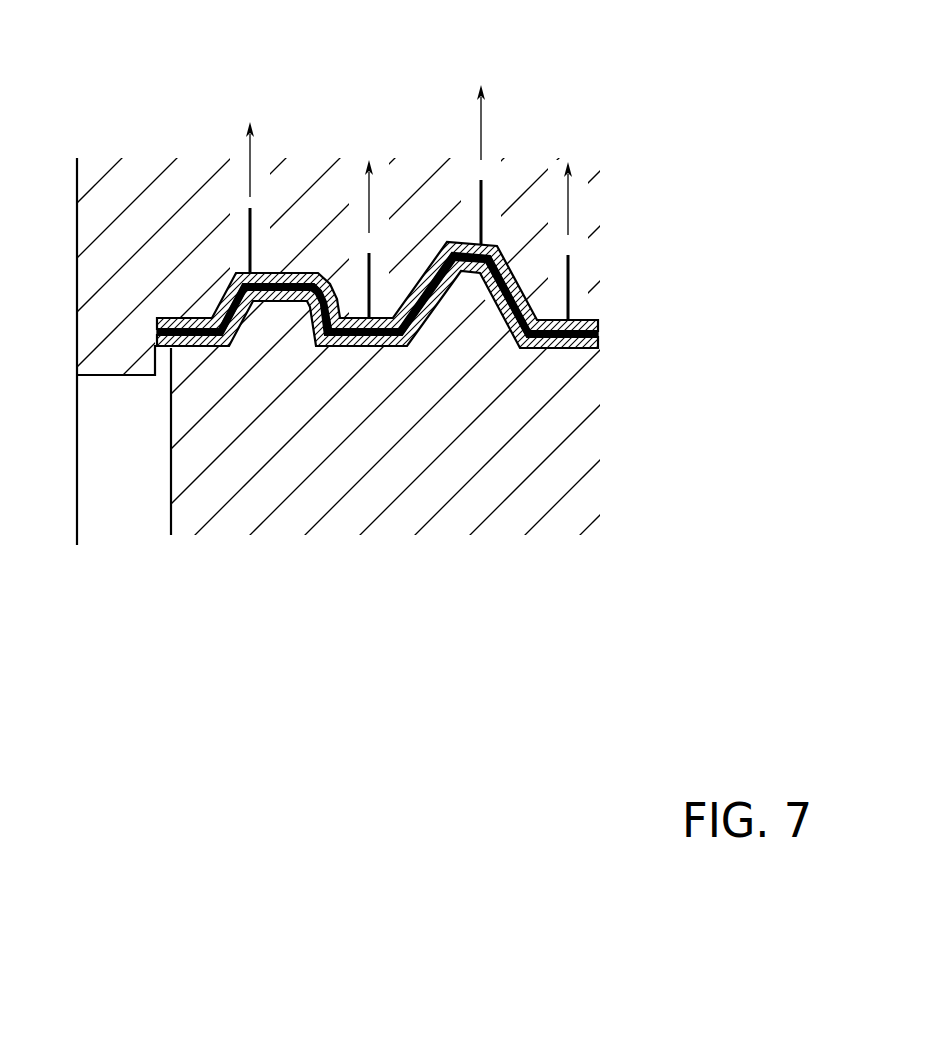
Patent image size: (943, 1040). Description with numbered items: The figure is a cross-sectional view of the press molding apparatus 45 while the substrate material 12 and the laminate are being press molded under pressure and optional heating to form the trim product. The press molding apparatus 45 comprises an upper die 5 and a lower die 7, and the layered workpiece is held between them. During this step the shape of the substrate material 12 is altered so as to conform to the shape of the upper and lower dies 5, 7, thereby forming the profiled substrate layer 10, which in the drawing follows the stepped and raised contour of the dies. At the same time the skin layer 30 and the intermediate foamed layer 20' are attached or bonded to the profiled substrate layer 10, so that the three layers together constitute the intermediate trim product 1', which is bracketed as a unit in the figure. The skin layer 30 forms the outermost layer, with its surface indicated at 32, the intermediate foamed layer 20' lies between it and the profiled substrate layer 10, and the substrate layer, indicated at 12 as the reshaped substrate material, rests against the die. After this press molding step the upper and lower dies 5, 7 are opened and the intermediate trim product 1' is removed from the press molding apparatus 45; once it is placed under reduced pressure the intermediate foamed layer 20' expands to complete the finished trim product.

The lower die 7 is at (95, 220).
The press molding apparatus 45 is at (378, 560).
The upper die 5 is at (187, 462).
The intermediate trim product 1' is at (446, 310).
The skin layer 30 is at (598, 321).
The upper resin layer surface 32 is at (401, 300).
The intermediate foamed layer 20' is at (435, 301).
The profiled substrate layer 10 is at (598, 346).
The substrate material 12 is at (399, 307).